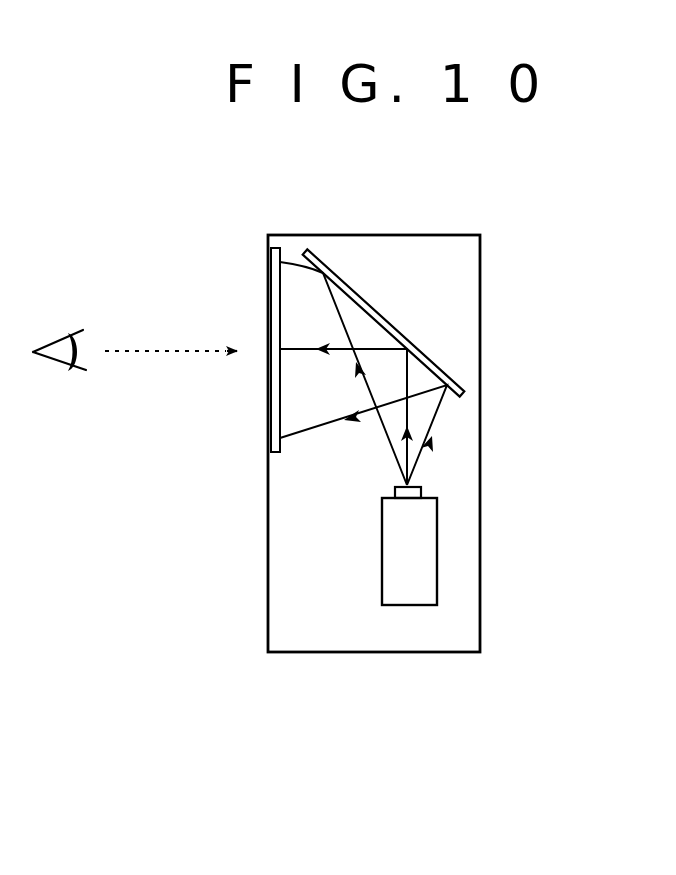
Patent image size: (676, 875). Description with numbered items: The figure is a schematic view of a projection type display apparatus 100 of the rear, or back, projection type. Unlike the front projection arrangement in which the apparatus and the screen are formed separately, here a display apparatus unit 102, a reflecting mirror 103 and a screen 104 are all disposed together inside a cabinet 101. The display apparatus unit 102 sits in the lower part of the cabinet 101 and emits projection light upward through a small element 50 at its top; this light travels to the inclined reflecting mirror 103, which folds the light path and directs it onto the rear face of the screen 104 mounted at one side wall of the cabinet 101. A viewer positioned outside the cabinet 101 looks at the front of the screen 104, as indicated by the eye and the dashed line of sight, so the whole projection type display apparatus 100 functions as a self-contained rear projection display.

The projection type display apparatus 100 is at (316, 681).
The cabinet 101 is at (371, 234).
The display apparatus unit 102 is at (432, 572).
The reflecting mirror 103 is at (443, 373).
The screen 104 is at (271, 430).
The projection lens 50 is at (425, 492).